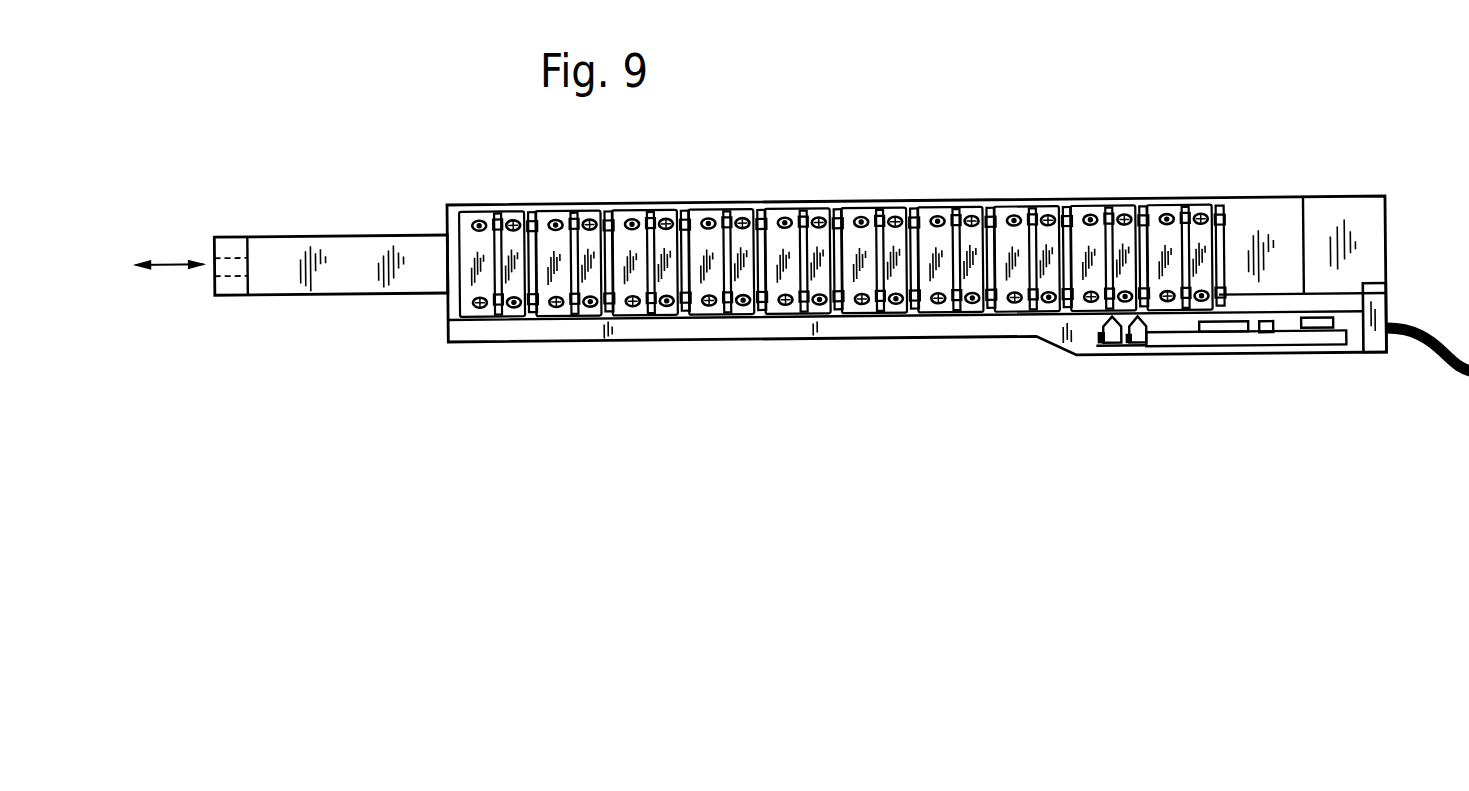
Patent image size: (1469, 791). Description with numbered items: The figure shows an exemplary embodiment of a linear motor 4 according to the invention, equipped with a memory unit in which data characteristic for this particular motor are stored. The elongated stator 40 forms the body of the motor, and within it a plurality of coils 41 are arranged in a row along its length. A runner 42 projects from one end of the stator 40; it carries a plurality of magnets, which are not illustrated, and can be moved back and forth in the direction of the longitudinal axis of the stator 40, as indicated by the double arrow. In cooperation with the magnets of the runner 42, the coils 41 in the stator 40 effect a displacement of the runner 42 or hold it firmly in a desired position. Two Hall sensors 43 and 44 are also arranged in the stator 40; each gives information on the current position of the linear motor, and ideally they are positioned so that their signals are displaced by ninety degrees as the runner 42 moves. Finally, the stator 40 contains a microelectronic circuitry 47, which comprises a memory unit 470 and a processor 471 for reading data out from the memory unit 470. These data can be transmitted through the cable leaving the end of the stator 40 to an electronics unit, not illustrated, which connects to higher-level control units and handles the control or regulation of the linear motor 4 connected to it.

The linear motor 4 is at (801, 240).
The stator 40 is at (1263, 213).
The coils 41 is at (623, 320).
The runner 42 is at (343, 268).
The Hall sensor 43 is at (1098, 344).
The Hall sensor 44 is at (1131, 346).
The microelectronic circuitry 47 is at (1273, 347).
The memory unit 470 is at (1197, 333).
The processor 471 is at (1273, 326).